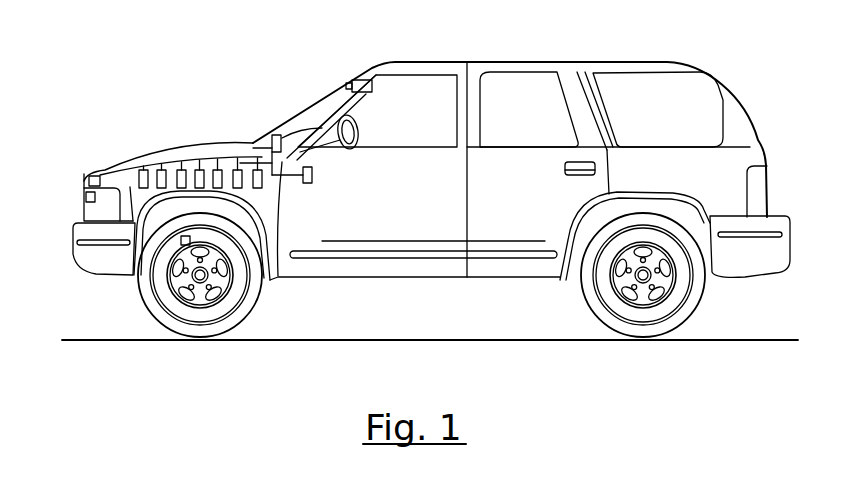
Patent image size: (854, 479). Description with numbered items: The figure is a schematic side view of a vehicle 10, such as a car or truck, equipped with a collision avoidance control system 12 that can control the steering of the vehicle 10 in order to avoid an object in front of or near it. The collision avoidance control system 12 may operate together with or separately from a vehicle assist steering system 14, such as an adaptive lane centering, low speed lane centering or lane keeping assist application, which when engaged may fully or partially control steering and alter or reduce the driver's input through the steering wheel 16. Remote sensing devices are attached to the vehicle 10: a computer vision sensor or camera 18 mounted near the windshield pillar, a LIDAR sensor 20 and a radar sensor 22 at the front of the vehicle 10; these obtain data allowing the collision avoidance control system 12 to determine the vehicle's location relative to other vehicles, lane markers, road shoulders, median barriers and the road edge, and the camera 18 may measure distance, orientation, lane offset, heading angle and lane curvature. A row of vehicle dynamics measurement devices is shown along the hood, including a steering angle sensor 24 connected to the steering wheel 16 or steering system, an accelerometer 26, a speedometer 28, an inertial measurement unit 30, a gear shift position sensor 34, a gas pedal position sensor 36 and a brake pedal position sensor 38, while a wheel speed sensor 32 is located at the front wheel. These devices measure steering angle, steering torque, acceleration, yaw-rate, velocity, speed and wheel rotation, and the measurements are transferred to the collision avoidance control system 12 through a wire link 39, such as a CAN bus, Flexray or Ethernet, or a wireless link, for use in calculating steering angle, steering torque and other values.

The vehicle 10 is at (443, 62).
The collision avoidance control system 12 is at (275, 134).
The vehicle assist steering system 14 is at (313, 175).
The steering wheel 16 is at (358, 128).
The computer vision sensor 18 is at (357, 78).
The LIDAR sensor 20 is at (85, 198).
The radar sensor 22 is at (86, 176).
The steering angle sensor 24 is at (262, 181).
The accelerometer 26 is at (237, 158).
The speedometer 28 is at (217, 159).
The inertial measurement unit 30 is at (199, 160).
The wheel speed sensor 32 is at (181, 241).
The gear shift position sensor 34 is at (181, 162).
The gas pedal position sensor 36 is at (161, 164).
The brake pedal position sensor 38 is at (143, 166).
The wire link 39 is at (284, 152).